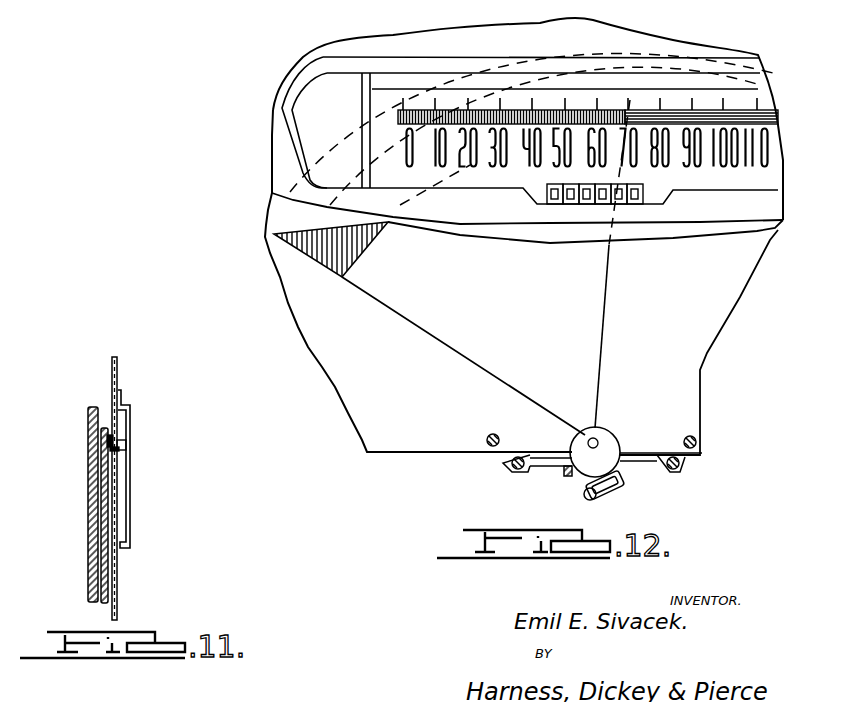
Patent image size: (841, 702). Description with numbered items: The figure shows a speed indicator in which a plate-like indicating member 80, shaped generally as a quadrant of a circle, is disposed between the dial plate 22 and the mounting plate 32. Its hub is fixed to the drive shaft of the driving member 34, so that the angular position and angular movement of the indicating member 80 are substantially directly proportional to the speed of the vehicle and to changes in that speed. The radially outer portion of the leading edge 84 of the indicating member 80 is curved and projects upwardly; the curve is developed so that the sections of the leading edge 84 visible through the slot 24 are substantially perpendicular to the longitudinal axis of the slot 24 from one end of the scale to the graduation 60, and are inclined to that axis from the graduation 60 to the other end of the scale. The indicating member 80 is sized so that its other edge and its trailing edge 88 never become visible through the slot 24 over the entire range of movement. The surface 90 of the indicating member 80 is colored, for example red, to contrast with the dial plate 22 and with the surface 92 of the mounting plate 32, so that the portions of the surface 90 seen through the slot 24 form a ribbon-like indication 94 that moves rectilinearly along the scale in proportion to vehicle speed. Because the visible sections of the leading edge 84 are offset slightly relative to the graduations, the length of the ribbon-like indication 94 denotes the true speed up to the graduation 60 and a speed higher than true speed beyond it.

In FIG. 11, the dial plate 22 is at (130, 418).
In FIG. 12, the slot 24 is at (518, 110).
In FIG. 11, the slot 24 is at (112, 448).
In FIG. 11, the mounting plate 32 is at (90, 511).
In FIG. 12, the driving member 34 is at (629, 485).
In FIG. 12, the graduation 60 is at (593, 102).
In FIG. 12, the indicating member 80 is at (613, 276).
In FIG. 11, the indicating member 80 is at (105, 418).
In FIG. 12, the leading edge 84 is at (684, 44).
In FIG. 12, the trailing edge 88 is at (423, 337).
In FIG. 11, the surface of the indicating member 90 is at (112, 455).
In FIG. 11, the surface of the mounting plate 92 is at (103, 470).
In FIG. 12, the ribbon-like indication 94 is at (457, 112).